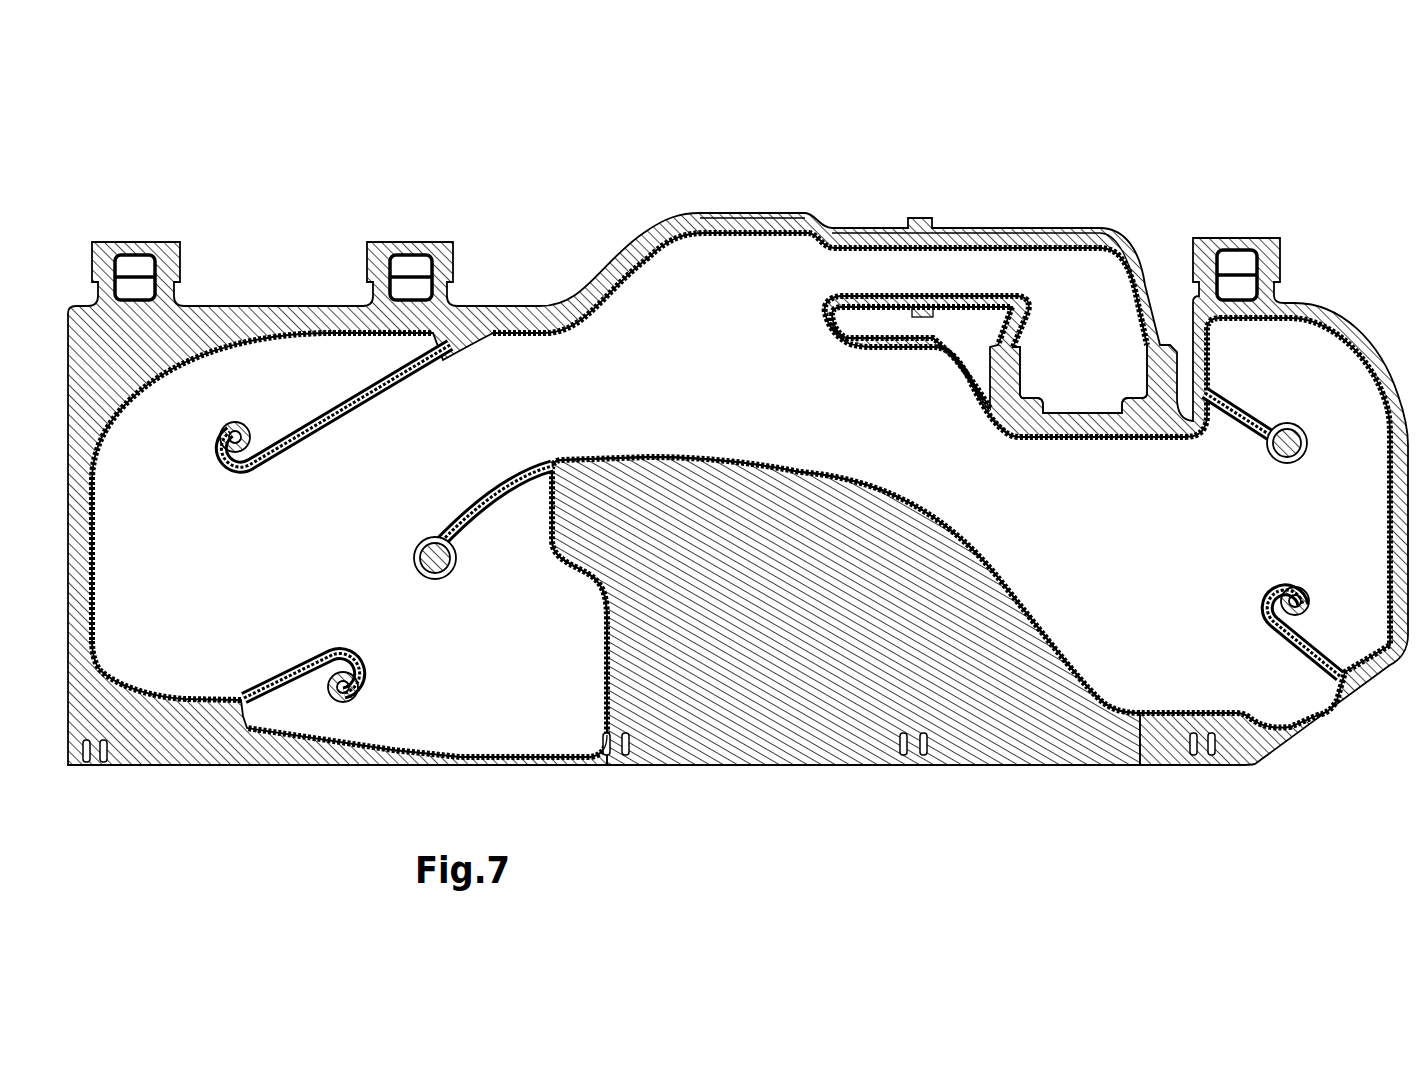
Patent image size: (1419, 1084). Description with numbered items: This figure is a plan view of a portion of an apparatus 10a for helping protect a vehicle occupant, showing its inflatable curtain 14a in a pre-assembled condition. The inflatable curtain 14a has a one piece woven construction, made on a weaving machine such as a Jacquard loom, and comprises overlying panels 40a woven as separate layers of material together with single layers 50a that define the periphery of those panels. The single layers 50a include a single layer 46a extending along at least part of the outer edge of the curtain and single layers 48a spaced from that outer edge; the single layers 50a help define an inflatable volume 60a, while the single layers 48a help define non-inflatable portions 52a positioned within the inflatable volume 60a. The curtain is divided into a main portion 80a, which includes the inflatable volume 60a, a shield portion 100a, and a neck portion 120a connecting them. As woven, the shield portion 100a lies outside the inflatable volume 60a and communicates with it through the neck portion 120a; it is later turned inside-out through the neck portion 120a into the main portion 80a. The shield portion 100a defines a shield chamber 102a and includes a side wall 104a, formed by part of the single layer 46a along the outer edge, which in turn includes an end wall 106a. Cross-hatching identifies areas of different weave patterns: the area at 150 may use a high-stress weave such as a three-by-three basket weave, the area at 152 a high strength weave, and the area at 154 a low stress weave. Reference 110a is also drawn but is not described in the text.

The apparatus 10a is at (572, 155).
The inflatable curtain 14a is at (1032, 203).
The overlying panels 40a is at (253, 370).
The single layer 46a is at (1003, 767).
The single layers 48a is at (1253, 410).
The single layers of material 50a is at (1233, 395).
The non-inflatable portions 52a is at (1290, 447).
The inflatable volume 60a is at (347, 363).
The main portion 80a is at (676, 794).
The shield portion 100a is at (978, 379).
The shield chamber 102a is at (1077, 345).
The side wall 104a is at (1150, 280).
The end wall 106a is at (1002, 425).
The right pad 110a is at (1097, 425).
The neck portion 120a is at (958, 263).
The high-stress weave pattern cross-hatching 150 is at (827, 318).
The high strength weave pattern cross-hatching 152 is at (698, 458).
The low stress weave pattern cross-hatching 154 is at (817, 747).